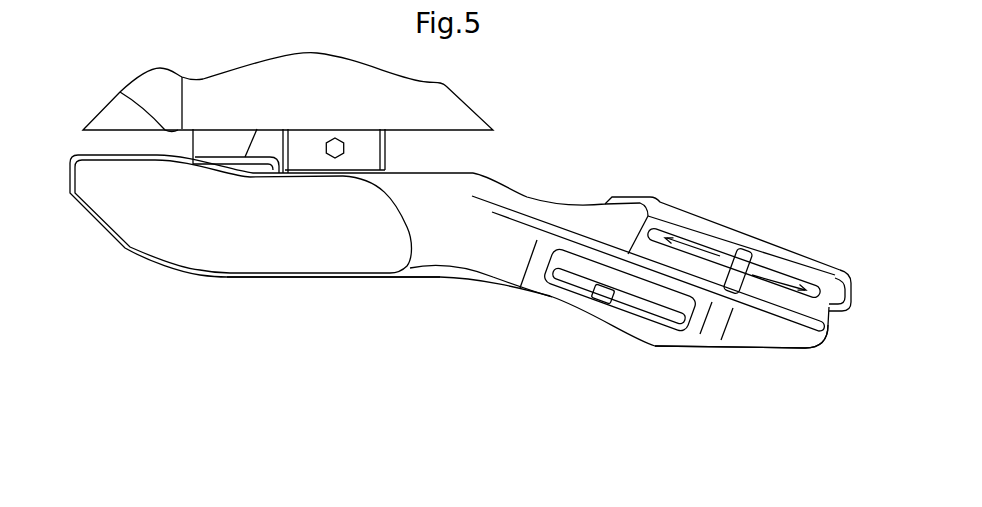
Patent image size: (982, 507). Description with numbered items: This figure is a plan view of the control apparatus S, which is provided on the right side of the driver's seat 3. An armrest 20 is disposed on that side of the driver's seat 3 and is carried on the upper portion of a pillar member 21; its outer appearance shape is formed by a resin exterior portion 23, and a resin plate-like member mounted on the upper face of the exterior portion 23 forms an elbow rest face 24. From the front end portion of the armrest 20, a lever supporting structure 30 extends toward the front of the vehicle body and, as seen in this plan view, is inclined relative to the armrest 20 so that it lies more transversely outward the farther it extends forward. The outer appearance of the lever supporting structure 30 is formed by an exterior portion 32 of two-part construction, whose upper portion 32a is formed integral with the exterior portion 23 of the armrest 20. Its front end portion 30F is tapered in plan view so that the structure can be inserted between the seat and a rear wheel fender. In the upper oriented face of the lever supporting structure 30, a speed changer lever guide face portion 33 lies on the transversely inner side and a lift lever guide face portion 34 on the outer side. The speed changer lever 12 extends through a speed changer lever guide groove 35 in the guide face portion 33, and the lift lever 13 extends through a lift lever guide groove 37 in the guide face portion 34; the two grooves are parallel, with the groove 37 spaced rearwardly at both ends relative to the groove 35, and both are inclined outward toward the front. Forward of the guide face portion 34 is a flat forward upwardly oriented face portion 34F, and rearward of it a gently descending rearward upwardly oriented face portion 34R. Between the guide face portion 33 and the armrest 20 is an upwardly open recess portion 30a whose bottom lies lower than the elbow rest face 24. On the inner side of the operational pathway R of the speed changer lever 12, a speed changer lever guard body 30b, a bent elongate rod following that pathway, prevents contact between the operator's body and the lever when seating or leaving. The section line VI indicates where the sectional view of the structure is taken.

The driver's seat 3 is at (458, 107).
The pillar member 21 is at (387, 147).
The armrest 20 is at (128, 250).
The exterior portion 23 is at (195, 275).
The elbow rest face 24 is at (278, 255).
The rearward upwardly oriented face portion 34R is at (457, 245).
The lever supporting structure 30 is at (648, 346).
The recess portion 30a is at (530, 216).
The speed changer lever guide groove 35 is at (658, 232).
The speed changer lever guide face portion 33 is at (643, 252).
The operational pathway R is at (704, 245).
The speed changer lever 12 is at (742, 250).
The speed changer lever guard body 30b is at (823, 263).
The lift lever guide face portion 34 is at (573, 265).
The lift lever guide groove 37 is at (635, 307).
The lift lever 13 is at (597, 300).
The upper portion 32a is at (740, 328).
The exterior portion 32 is at (727, 324).
The forward upwardly oriented face portion 34F is at (770, 338).
The front end portion 30F is at (806, 349).
The control apparatus S is at (650, 156).
The VI-VI section line VI is at (787, 167).